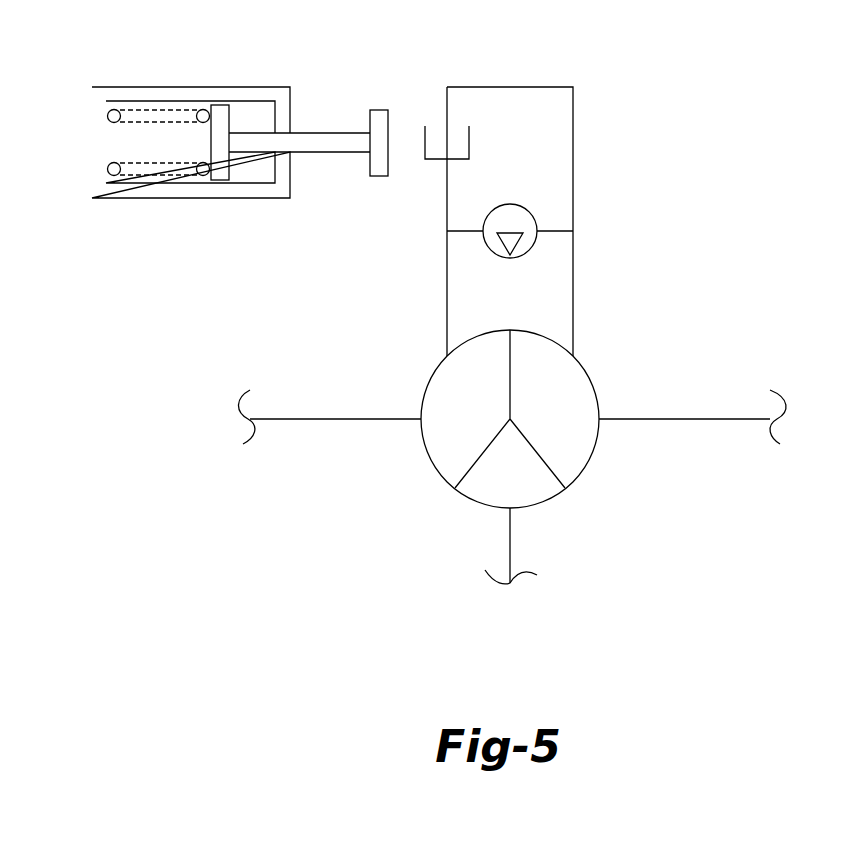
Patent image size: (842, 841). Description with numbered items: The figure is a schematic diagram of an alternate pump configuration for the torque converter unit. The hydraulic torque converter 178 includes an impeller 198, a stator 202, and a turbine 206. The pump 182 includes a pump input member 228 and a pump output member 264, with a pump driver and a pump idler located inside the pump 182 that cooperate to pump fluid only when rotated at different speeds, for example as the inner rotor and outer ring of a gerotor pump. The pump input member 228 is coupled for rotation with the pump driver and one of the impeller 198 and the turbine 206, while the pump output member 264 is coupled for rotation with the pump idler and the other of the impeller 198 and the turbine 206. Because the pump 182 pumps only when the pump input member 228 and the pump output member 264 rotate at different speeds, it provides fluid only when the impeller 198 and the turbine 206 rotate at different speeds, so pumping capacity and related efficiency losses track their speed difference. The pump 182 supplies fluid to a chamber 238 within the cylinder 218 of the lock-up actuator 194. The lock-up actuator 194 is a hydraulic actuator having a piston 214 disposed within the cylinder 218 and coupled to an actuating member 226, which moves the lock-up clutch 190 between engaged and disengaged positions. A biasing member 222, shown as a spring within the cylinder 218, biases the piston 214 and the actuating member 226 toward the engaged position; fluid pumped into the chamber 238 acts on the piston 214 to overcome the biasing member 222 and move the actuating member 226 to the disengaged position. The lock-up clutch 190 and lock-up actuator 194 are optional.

The hydraulic torque converter 178 is at (512, 355).
The pump 182 is at (518, 204).
The lock-up clutch 190 is at (435, 159).
The lock-up actuator 194 is at (209, 160).
The impeller 198 is at (425, 397).
The stator 202 is at (547, 505).
The turbine 206 is at (588, 375).
The piston 214 is at (219, 105).
The cylinder 218 is at (92, 143).
The biasing member 222 is at (113, 110).
The actuating member 226 is at (378, 110).
The pump input member 228 is at (465, 231).
The chamber 238 is at (254, 110).
The pump output member 264 is at (555, 232).